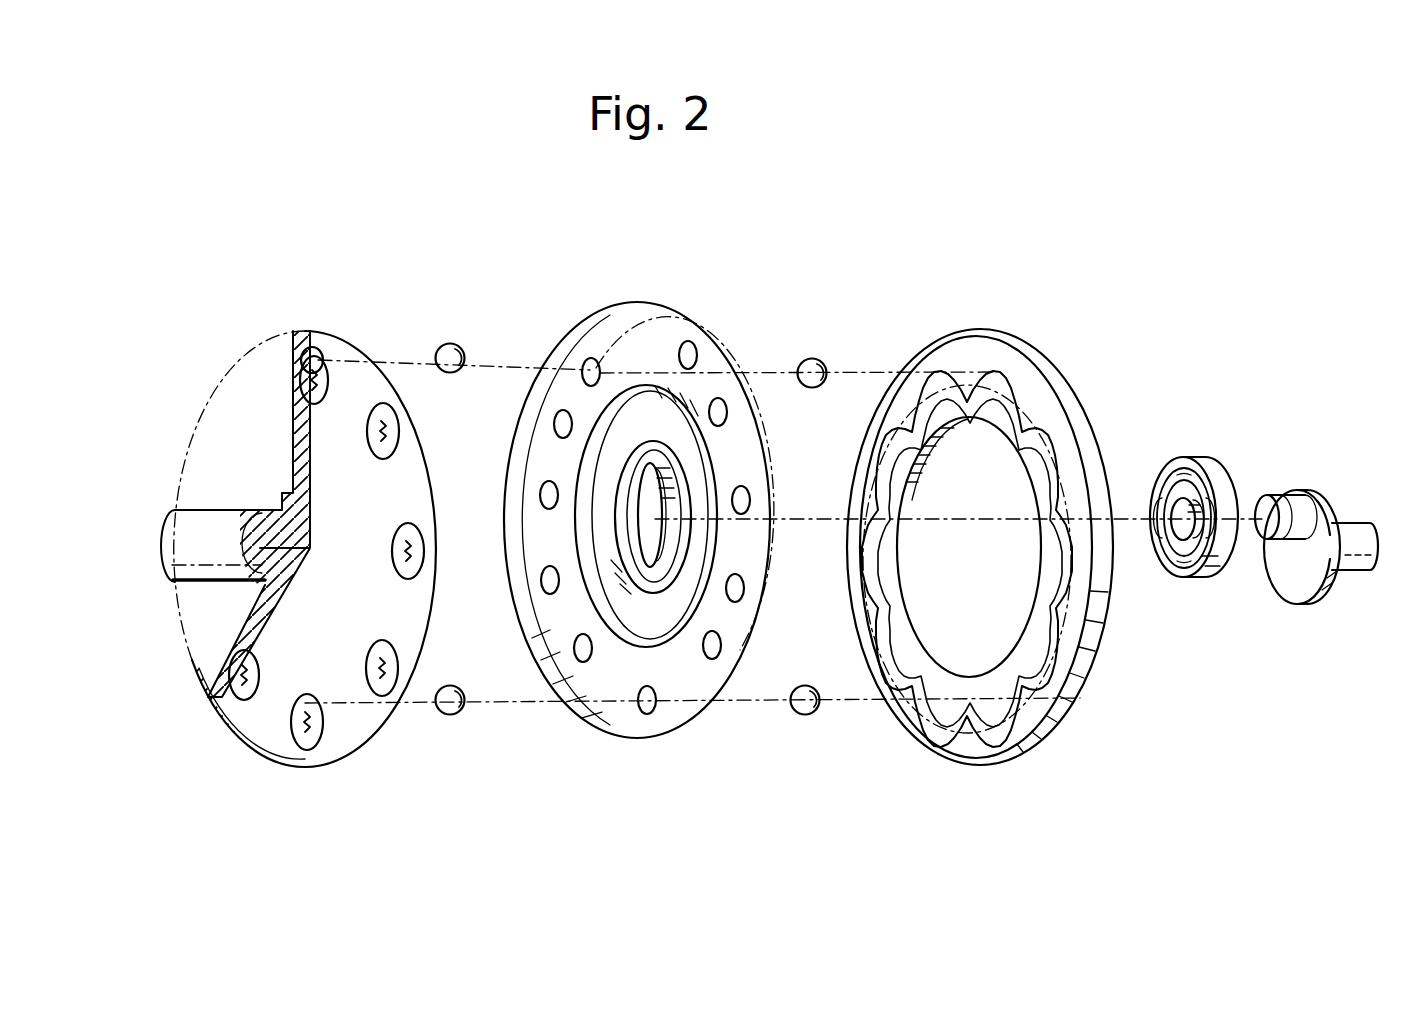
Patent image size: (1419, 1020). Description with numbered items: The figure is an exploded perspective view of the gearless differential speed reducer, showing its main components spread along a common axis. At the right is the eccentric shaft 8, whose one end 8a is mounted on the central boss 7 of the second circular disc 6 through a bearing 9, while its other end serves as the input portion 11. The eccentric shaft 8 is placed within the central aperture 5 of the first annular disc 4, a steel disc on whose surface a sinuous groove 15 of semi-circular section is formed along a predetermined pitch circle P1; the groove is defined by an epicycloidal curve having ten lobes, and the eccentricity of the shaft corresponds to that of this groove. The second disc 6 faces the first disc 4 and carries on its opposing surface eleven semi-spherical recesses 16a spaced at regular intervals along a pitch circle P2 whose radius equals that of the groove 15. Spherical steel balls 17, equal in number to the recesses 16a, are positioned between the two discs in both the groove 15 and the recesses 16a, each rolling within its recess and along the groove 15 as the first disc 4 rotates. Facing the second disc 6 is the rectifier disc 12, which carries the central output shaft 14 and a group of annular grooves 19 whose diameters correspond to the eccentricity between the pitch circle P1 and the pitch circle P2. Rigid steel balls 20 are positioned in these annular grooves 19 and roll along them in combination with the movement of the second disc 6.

The rectifier disc 12 is at (340, 338).
The central output shaft 14 is at (193, 556).
The annular grooves 19 is at (316, 736).
The rigid steel balls 20 is at (457, 714).
The second circular disc 6 is at (652, 322).
The central boss 7 is at (672, 499).
The pitch circle P2 is at (690, 318).
The semi-spherical recesses 16a is at (549, 486).
The rollable balls 17 is at (806, 715).
The first annular disc 4 is at (1035, 352).
The sinuous groove 15 is at (1030, 435).
The central aperture 5 is at (1020, 458).
The pitch circle P1 is at (928, 345).
The bearing 9 is at (1200, 460).
The end of eccentric shaft 8a is at (1282, 495).
The eccentric shaft 8 is at (1322, 604).
The input portion 11 is at (1350, 524).